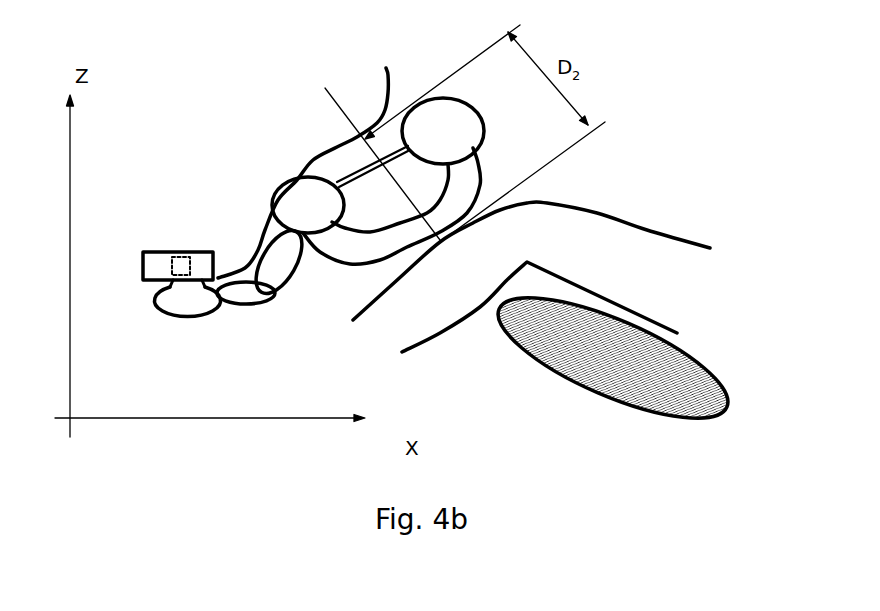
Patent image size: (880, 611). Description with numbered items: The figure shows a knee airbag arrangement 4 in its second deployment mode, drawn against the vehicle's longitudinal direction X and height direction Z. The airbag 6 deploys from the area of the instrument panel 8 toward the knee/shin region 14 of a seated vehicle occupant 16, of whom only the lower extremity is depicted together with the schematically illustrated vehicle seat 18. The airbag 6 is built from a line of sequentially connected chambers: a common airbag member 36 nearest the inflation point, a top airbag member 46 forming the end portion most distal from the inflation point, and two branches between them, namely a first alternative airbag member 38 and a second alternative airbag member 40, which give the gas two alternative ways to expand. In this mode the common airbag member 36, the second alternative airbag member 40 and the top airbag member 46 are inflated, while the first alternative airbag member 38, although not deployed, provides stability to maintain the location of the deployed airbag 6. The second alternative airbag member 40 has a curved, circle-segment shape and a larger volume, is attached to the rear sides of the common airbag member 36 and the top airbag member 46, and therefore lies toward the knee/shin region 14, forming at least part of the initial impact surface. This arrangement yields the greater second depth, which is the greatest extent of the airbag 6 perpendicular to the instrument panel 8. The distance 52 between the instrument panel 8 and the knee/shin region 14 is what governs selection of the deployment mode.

The knee airbag arrangement 4 is at (208, 337).
The airbag 6 is at (267, 292).
The instrument panel 8 is at (307, 167).
The knee/shin region 14 is at (456, 265).
The vehicle occupant 16 is at (683, 270).
The vehicle seat 18 is at (613, 358).
The common airbag member 36 is at (305, 269).
The first alternative airbag member 38 is at (380, 152).
The second alternative airbag member 40 is at (470, 175).
The top airbag member 46 is at (465, 115).
The distance 52 is at (398, 186).